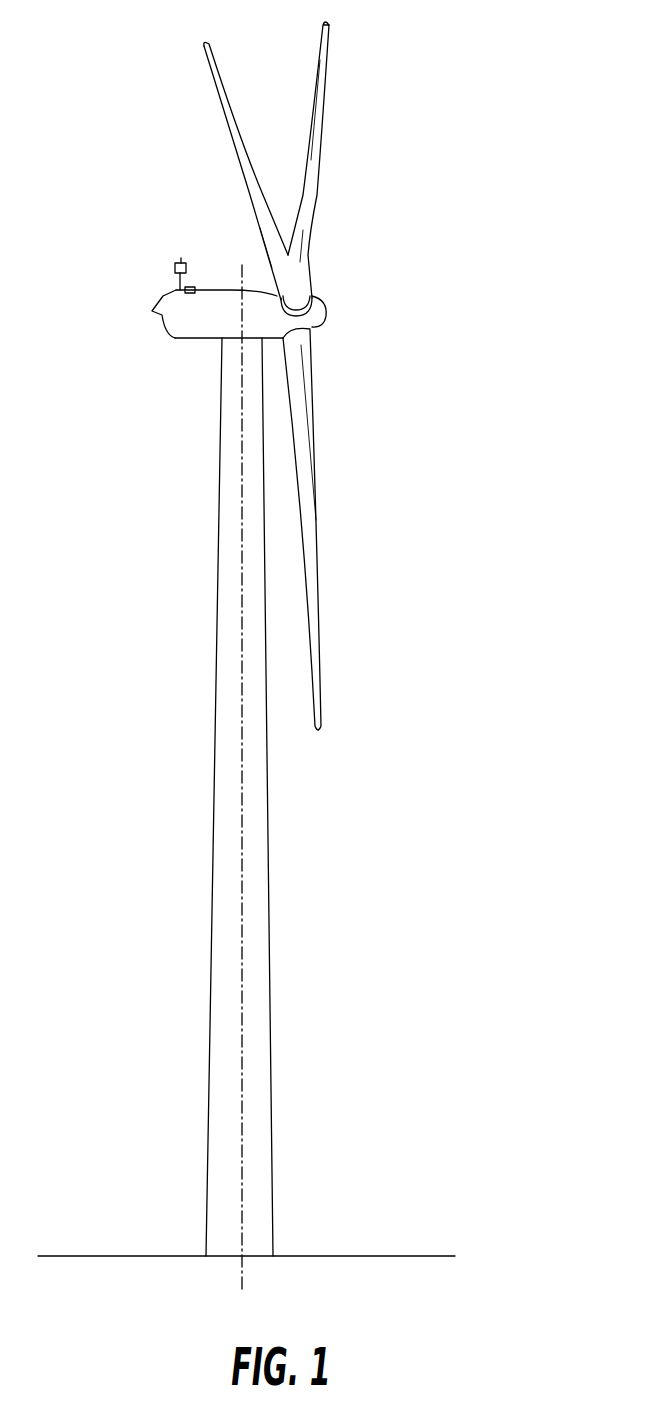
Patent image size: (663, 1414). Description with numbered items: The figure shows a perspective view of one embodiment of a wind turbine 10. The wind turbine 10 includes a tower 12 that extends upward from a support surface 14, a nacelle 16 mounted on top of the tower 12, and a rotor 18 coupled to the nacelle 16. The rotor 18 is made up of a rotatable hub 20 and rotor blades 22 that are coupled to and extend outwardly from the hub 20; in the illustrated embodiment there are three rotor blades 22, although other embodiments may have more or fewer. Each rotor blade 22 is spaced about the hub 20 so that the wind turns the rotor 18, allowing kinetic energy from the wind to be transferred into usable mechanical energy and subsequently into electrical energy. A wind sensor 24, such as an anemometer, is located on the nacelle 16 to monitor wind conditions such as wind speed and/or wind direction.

The wind turbine 10 is at (478, 75).
The tower 12 is at (215, 779).
The support surface 14 is at (246, 1227).
The nacelle 16 is at (206, 344).
The rotor 18 is at (332, 358).
The rotatable hub 20 is at (340, 310).
The rotor blade 22 is at (293, 376).
The wind sensor 24 is at (133, 267).